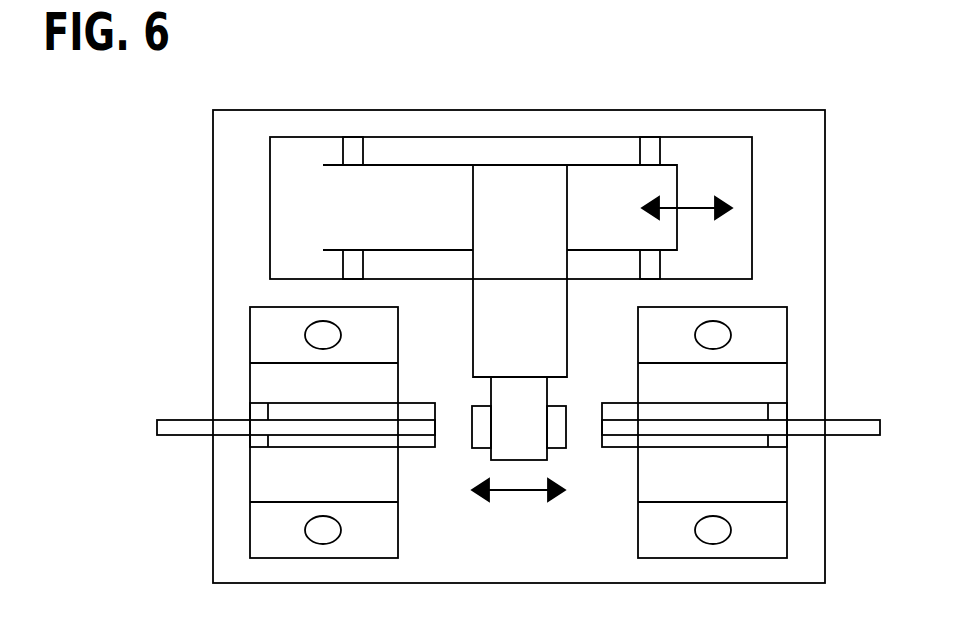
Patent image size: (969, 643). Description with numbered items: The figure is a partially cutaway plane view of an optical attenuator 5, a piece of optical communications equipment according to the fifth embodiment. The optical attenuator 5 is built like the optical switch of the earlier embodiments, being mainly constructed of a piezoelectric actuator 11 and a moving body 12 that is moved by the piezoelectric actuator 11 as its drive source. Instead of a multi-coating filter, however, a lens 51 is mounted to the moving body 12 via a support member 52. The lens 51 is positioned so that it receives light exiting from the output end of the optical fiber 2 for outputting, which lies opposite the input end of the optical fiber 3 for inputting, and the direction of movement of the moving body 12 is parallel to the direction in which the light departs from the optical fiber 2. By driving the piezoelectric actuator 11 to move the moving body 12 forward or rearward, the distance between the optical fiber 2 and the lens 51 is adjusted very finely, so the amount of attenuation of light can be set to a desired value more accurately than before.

The optical attenuator 5 is at (268, 58).
The piezoelectric actuator 11 is at (432, 152).
The moving body 12 is at (597, 185).
The support member 52 is at (493, 287).
The lens 51 is at (478, 442).
The optical fiber for outputting 2 is at (177, 428).
The optical fiber for inputting 3 is at (860, 428).